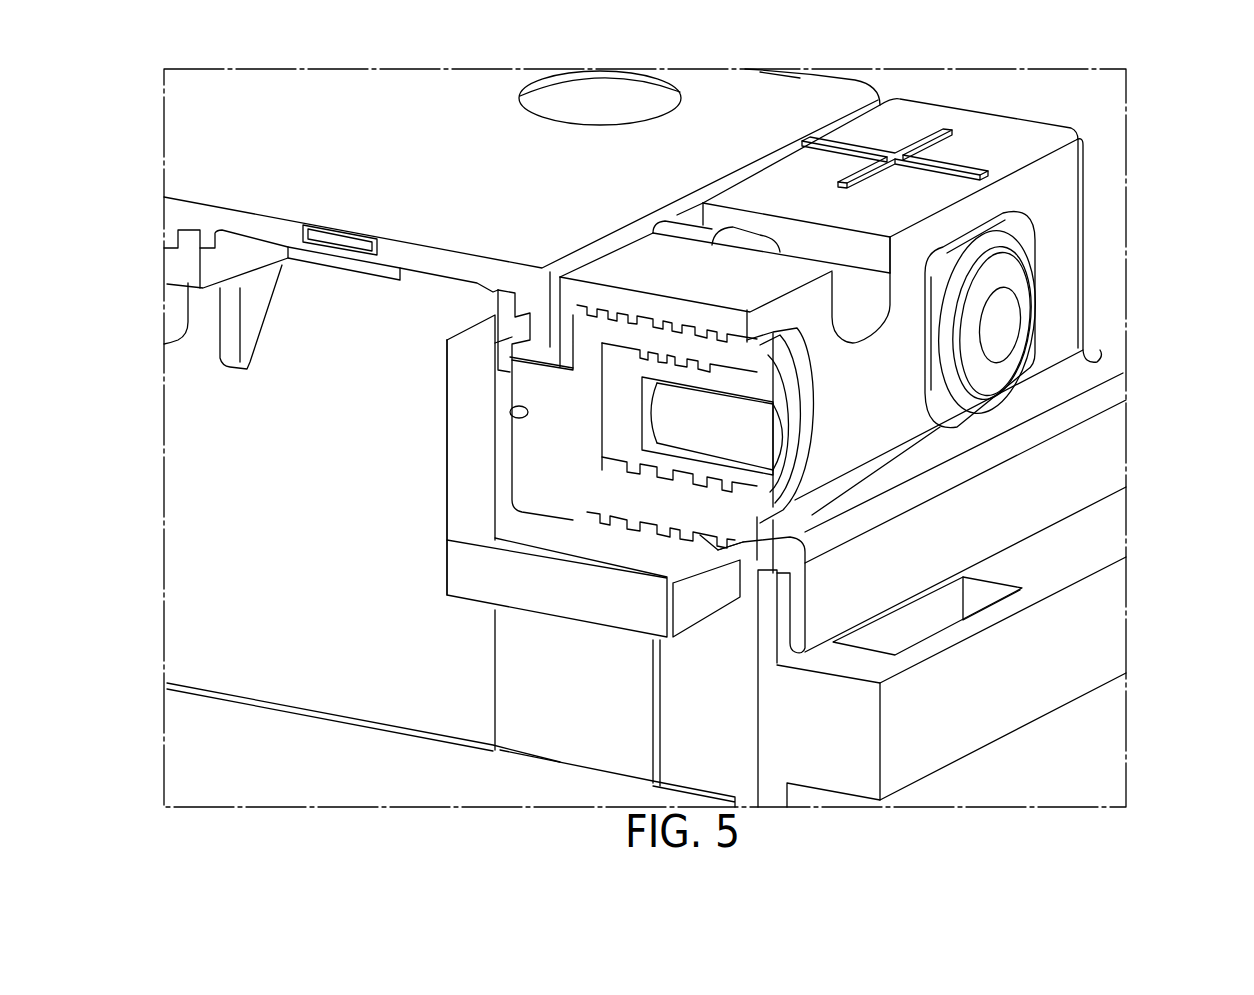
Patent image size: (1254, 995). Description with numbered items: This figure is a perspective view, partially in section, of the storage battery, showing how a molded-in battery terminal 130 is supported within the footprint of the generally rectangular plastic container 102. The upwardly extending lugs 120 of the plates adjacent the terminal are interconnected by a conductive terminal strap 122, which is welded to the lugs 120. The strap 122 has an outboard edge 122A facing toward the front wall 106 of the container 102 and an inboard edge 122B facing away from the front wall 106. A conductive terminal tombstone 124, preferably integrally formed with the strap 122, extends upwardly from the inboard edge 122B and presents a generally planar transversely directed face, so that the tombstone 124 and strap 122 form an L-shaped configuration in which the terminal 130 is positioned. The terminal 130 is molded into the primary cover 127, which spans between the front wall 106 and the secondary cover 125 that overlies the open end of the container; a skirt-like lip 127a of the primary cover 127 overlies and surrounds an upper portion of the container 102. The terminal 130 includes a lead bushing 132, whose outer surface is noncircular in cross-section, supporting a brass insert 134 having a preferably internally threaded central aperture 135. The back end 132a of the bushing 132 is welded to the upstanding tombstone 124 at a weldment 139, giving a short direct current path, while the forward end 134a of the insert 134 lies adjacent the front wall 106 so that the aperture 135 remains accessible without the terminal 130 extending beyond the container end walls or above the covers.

The container 102 is at (202, 412).
The front wall 106 is at (788, 730).
The lug 120 is at (513, 688).
The conductive terminal strap 122 is at (493, 577).
The outboard edge 122A is at (681, 603).
The inboard edge 122B is at (447, 540).
The conductive terminal tombstone 124 is at (467, 447).
The secondary cover 125 is at (790, 100).
The primary cover 127 is at (993, 125).
The skirt-like lip 127a is at (1093, 441).
The battery terminal 130 is at (738, 478).
The lead bushing 132 is at (553, 487).
The back end 132a is at (512, 418).
The brass insert 134 is at (622, 460).
The forward end 134a is at (1008, 272).
The central aperture 135 is at (1003, 333).
The weldment 139 is at (503, 453).